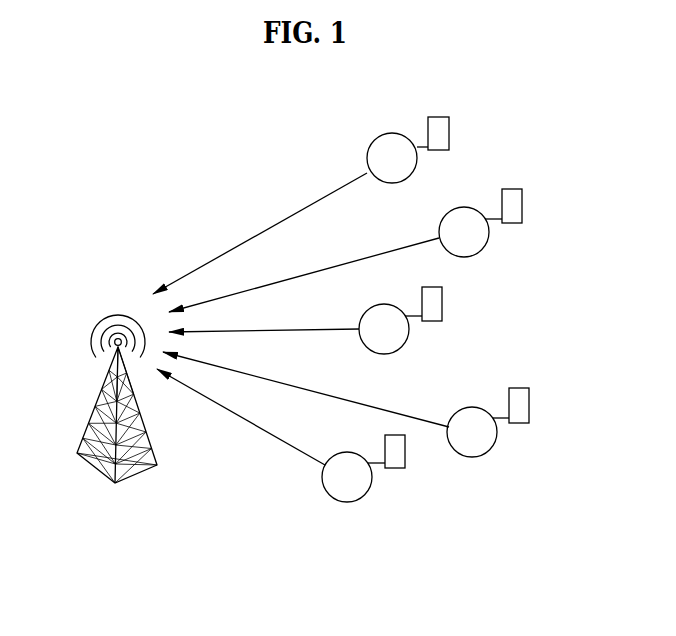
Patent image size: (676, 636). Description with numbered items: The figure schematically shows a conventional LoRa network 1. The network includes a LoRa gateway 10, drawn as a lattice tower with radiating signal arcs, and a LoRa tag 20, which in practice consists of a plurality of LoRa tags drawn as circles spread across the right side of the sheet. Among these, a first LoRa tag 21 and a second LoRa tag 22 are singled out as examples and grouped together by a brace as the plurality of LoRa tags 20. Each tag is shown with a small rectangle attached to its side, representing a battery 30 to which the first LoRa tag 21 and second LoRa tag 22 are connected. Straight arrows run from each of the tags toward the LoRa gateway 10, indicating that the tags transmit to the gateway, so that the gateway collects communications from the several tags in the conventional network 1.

The LoRa network 1 is at (82, 174).
The LoRa gateway 10 is at (88, 407).
The LoRa tag 20 is at (350, 567).
The first LoRa tag 21 is at (352, 496).
The second LoRa tag 22 is at (475, 452).
The battery 30 is at (530, 404).